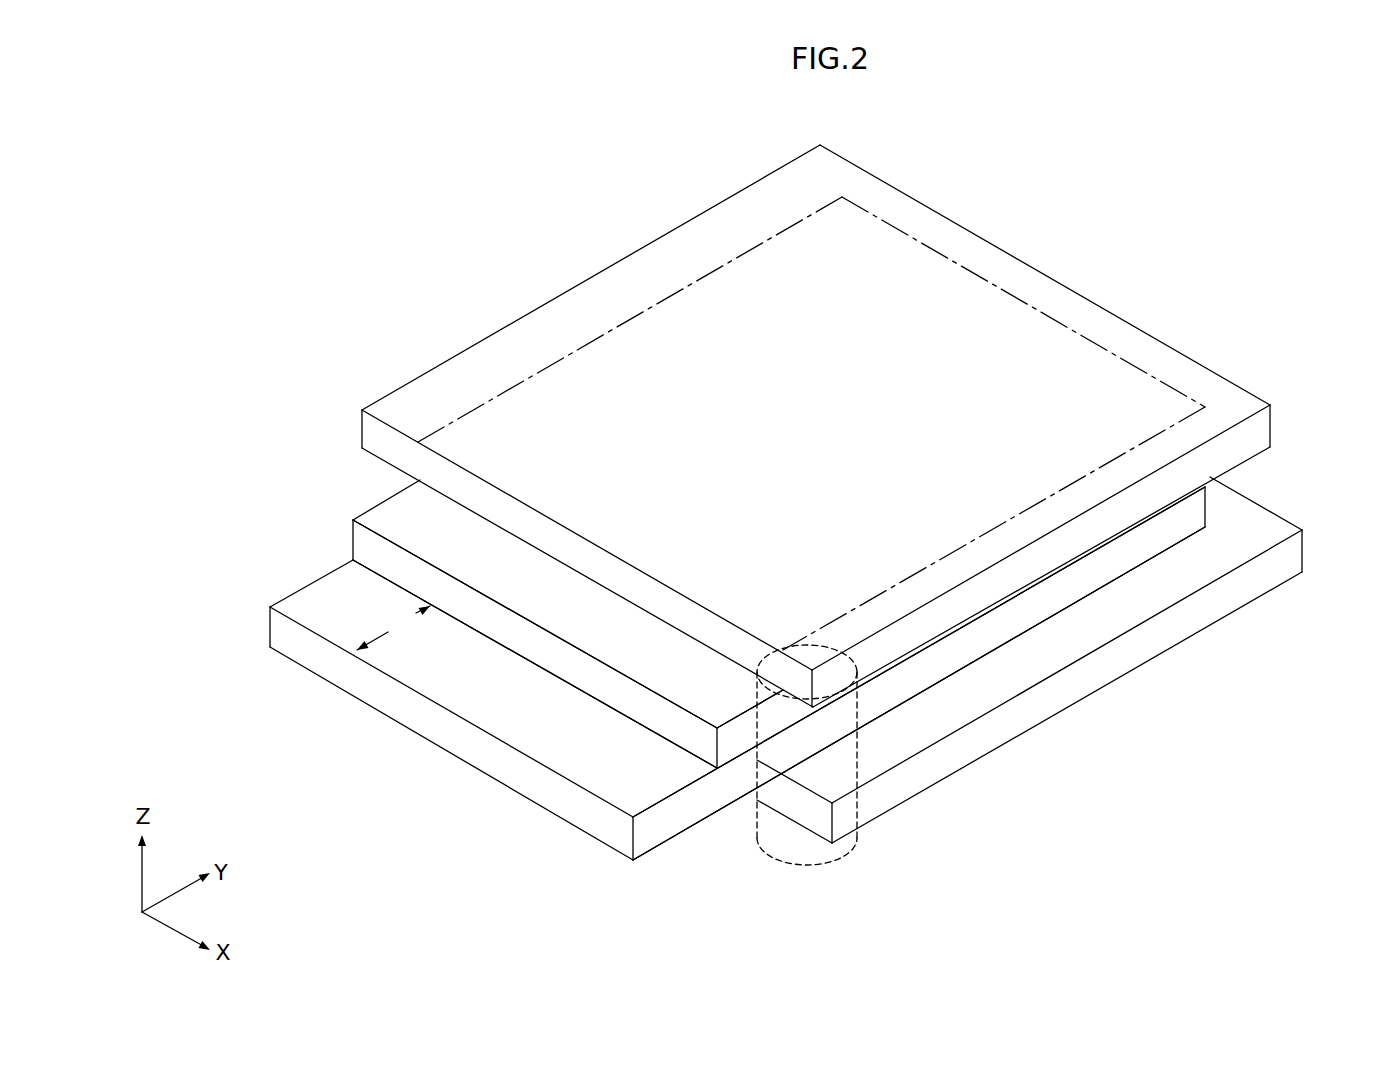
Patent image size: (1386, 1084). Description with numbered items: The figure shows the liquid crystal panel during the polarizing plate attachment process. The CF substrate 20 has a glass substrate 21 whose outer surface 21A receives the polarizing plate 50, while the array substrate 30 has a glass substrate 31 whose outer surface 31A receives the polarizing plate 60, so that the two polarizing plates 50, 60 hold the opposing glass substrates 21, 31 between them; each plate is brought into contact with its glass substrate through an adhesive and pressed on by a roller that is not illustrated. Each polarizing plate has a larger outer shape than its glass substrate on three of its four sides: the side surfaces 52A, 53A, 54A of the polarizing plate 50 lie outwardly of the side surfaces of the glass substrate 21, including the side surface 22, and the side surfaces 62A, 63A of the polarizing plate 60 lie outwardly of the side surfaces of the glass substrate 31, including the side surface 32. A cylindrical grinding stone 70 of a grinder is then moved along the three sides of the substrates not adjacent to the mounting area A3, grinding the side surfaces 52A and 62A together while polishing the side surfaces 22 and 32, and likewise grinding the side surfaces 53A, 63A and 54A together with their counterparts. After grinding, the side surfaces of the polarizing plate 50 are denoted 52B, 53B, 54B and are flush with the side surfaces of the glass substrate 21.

The CF substrate 20 is at (550, 593).
The glass substrate 21 is at (603, 635).
The outer surface 21A is at (493, 545).
The side surface 22 is at (737, 740).
The array substrate 30 is at (737, 671).
The glass substrate 31 is at (583, 752).
The outer surface 31A is at (905, 703).
The side surface 32 is at (997, 633).
The polarizing plate 50 is at (866, 415).
The side surface 52A is at (1142, 497).
The side surface 52B is at (1160, 434).
The side surface 53A is at (968, 230).
The side surface 53B is at (1057, 312).
The side surface 54A is at (596, 273).
The side surface 54B is at (738, 255).
The polarizing plate 60 is at (1059, 647).
The side surface 62A is at (1140, 642).
The side surface 63A is at (1235, 488).
The grinding stone 70 is at (807, 851).
The mounting area A3 is at (393, 633).